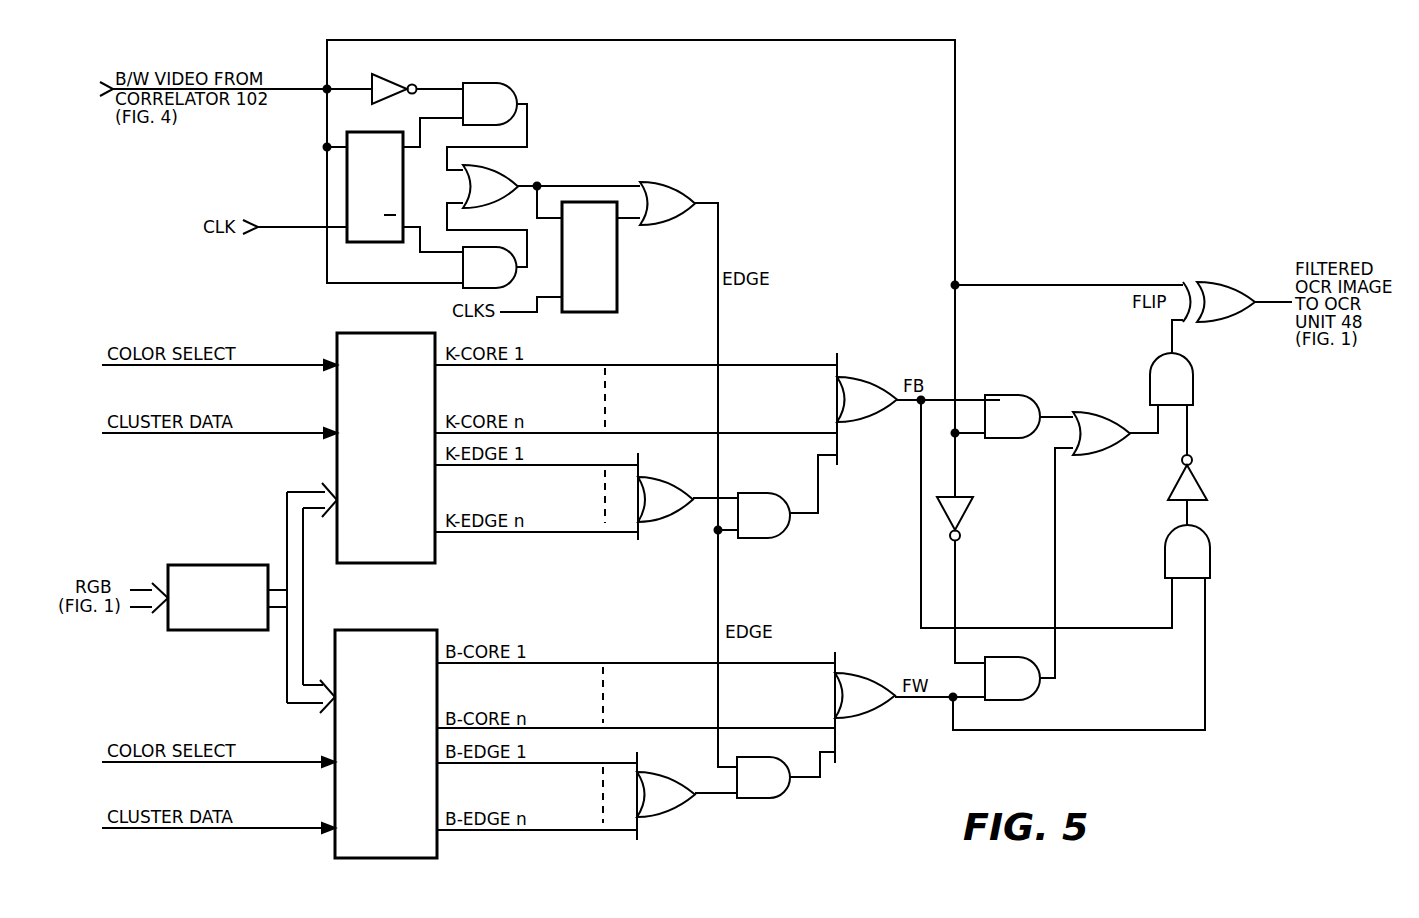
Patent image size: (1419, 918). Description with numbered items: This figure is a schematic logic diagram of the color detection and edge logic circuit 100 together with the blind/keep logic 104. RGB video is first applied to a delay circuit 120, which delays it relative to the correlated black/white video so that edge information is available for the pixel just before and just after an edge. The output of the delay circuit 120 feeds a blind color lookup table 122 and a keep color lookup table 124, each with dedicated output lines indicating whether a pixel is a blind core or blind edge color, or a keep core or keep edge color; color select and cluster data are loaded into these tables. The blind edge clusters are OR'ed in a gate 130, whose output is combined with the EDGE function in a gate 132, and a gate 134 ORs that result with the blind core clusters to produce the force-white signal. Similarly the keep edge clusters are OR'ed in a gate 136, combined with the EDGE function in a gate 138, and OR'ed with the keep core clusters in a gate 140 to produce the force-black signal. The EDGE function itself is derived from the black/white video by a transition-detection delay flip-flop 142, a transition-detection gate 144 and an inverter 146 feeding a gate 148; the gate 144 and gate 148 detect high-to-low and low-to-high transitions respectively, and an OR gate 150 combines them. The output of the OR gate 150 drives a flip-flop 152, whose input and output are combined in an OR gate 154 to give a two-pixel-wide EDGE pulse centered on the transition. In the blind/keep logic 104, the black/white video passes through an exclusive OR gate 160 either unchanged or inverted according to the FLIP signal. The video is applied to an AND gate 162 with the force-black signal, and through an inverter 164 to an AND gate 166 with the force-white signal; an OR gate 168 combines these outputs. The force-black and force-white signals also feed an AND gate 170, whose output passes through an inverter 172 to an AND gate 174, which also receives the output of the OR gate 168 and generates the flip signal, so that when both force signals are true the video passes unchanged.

The circuit 100 is at (672, 341).
The blind/keep logic 104 is at (1080, 358).
The delay circuit 120 is at (213, 565).
The blind color lookup table 122 is at (408, 789).
The keep color lookup table 124 is at (408, 509).
The gate 130 is at (668, 800).
The gate 132 is at (770, 785).
The gate 134 is at (865, 690).
The gate 136 is at (663, 500).
The gate 138 is at (765, 518).
The gate 140 is at (867, 392).
The transition-detection delay flip-flop 142 is at (395, 193).
The transition-detection gate 144 is at (470, 268).
The inverter 146 is at (382, 90).
The gate 148 is at (508, 103).
The OR gate 150 is at (500, 188).
The flip-flop 152 is at (590, 270).
The OR gate 154 is at (665, 205).
The exclusive OR gate 160 is at (1218, 292).
The AND gate 162 is at (1015, 410).
The inverter 164 is at (960, 505).
The AND gate 166 is at (1020, 685).
The OR gate 168 is at (1098, 440).
The AND gate 170 is at (1195, 558).
The inverter 172 is at (1195, 490).
The AND gate 174 is at (1178, 385).